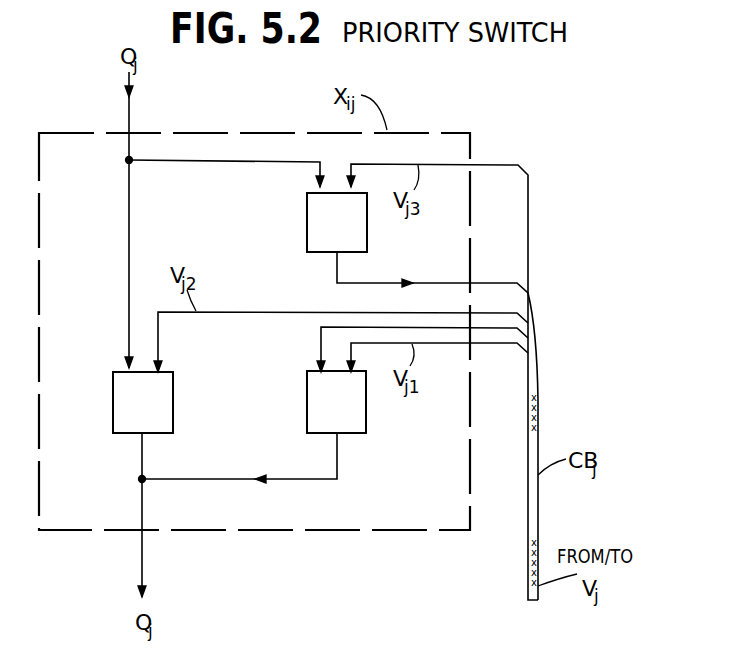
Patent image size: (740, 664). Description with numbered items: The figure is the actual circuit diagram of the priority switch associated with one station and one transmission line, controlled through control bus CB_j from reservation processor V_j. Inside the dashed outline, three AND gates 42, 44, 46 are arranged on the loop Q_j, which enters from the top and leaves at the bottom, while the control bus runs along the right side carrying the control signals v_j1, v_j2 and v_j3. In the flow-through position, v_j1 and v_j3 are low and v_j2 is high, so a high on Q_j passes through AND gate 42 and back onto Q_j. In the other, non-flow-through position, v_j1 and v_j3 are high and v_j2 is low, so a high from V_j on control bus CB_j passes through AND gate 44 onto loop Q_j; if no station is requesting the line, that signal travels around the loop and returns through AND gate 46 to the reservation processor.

The AND gate 42 is at (113, 399).
The AND gate 44 is at (307, 400).
The AND gate 46 is at (307, 216).